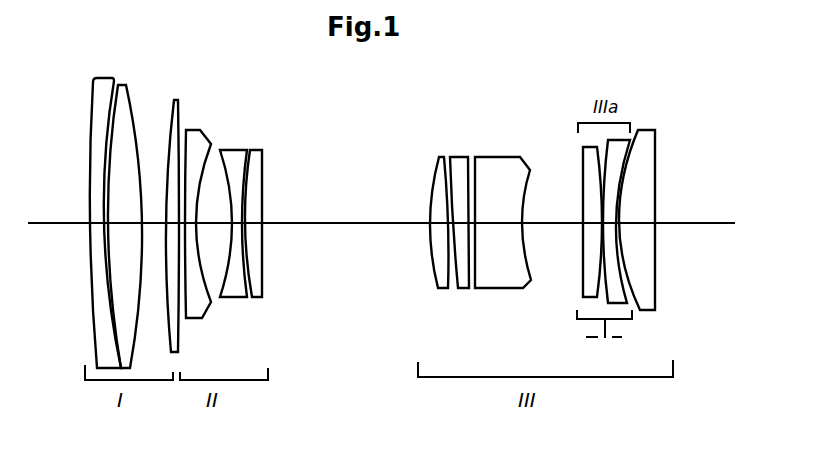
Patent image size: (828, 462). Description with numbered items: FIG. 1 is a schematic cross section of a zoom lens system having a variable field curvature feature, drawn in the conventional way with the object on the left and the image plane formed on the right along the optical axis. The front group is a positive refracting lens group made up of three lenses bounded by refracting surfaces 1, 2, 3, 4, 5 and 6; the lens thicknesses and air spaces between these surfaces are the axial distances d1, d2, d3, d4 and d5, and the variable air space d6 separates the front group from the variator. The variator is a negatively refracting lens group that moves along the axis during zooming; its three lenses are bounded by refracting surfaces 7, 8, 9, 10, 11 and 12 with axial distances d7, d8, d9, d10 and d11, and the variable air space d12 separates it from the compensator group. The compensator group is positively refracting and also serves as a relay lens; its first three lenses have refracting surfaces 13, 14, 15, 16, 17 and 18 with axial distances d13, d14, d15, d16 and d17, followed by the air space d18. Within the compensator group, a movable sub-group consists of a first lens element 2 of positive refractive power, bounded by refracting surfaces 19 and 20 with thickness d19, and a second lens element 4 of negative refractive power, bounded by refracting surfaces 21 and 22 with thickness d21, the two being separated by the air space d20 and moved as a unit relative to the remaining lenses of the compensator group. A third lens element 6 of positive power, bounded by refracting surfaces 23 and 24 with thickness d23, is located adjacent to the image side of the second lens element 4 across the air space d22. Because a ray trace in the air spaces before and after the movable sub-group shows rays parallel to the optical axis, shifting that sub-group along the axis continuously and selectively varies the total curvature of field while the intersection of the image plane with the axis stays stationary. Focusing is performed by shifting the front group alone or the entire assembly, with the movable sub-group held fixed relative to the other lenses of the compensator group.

The first lens surface 1 is at (92, 116).
The first lens element 2 is at (94, 335).
The third lens surface 3 is at (116, 106).
The second lens element 4 is at (133, 338).
The fifth lens surface 5 is at (168, 112).
The third lens element 6 is at (170, 343).
The seventh lens surface 7 is at (187, 130).
The eighth lens surface 8 is at (210, 303).
The ninth lens surface 9 is at (220, 150).
The tenth lens surface 10 is at (257, 298).
The eleventh lens surface 11 is at (250, 152).
The twelfth lens surface 12 is at (262, 283).
The thirteenth lens surface 13 is at (438, 165).
The fourteenth lens surface 14 is at (442, 293).
The fifteenth lens surface 15 is at (458, 157).
The sixteenth lens surface 16 is at (470, 289).
The seventeenth lens surface 17 is at (478, 178).
The eighteenth lens surface 18 is at (526, 288).
The nineteenth lens surface 19 is at (583, 190).
The twentieth lens surface 20 is at (577, 313).
The twenty-first lens surface 21 is at (585, 124).
The twenty-second lens surface 22 is at (637, 303).
The twenty-third lens surface 23 is at (639, 128).
The twenty-fourth lens surface 24 is at (657, 280).
The axial thickness of first lens d1 is at (95, 217).
The air space d2 is at (102, 240).
The axial thickness of second lens d3 is at (127, 222).
The air space d4 is at (140, 228).
The axial thickness of third lens d5 is at (155, 221).
The variable air space d6 is at (175, 243).
The axial thickness of fourth lens d7 is at (203, 195).
The air space d8 is at (213, 224).
The axial thickness of fifth lens d9 is at (233, 220).
The air space d10 is at (248, 237).
The axial thickness of sixth lens d11 is at (258, 213).
The variable air space d12 is at (340, 224).
The axial thickness of seventh lens d13 is at (438, 220).
The air space d14 is at (453, 297).
The axial thickness of eighth lens d15 is at (457, 173).
The air space d16 is at (475, 232).
The axial thickness of ninth lens d17 is at (498, 222).
The air space d18 is at (535, 230).
The axial thickness of first lens element d19 is at (590, 214).
The air space d20 is at (597, 297).
The axial thickness of second lens element d21 is at (616, 213).
The air space d22 is at (640, 243).
The axial thickness of third lens element d23 is at (645, 221).